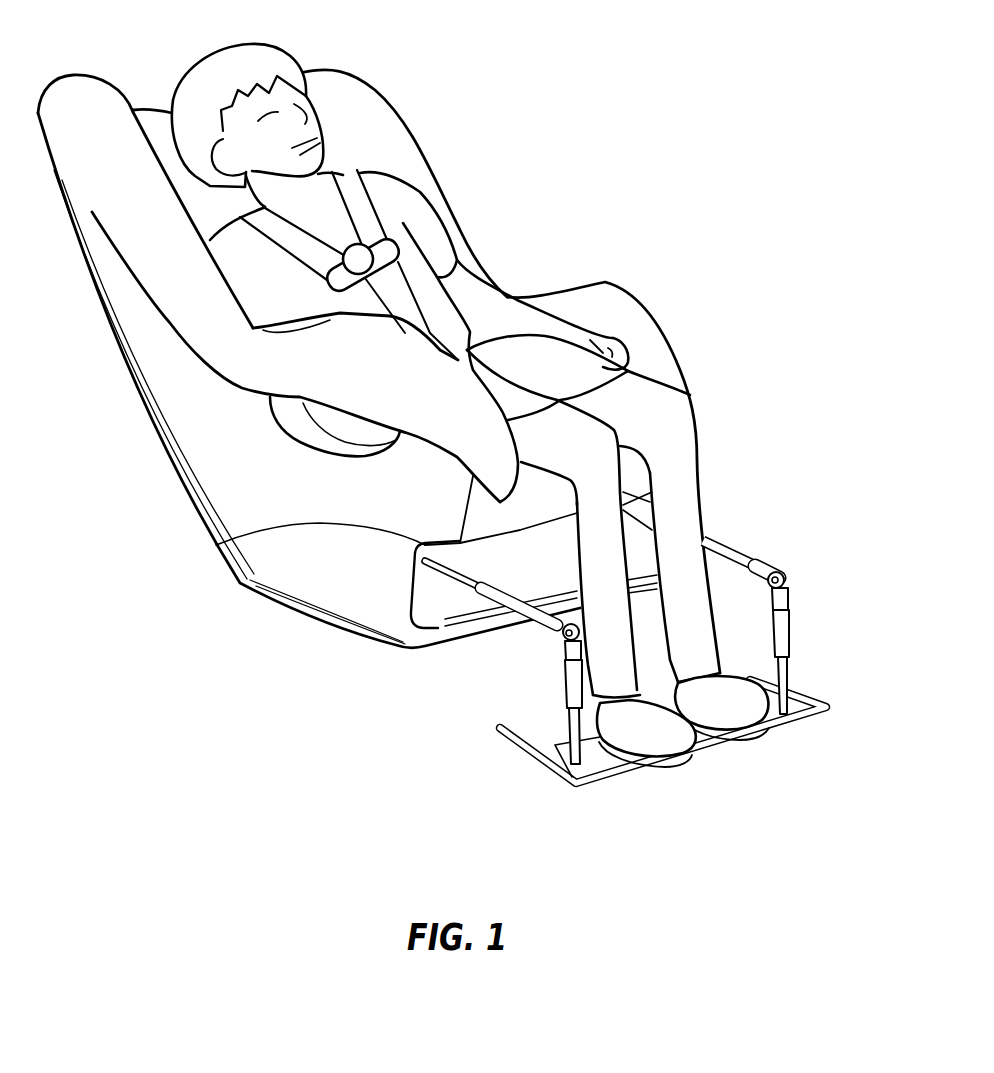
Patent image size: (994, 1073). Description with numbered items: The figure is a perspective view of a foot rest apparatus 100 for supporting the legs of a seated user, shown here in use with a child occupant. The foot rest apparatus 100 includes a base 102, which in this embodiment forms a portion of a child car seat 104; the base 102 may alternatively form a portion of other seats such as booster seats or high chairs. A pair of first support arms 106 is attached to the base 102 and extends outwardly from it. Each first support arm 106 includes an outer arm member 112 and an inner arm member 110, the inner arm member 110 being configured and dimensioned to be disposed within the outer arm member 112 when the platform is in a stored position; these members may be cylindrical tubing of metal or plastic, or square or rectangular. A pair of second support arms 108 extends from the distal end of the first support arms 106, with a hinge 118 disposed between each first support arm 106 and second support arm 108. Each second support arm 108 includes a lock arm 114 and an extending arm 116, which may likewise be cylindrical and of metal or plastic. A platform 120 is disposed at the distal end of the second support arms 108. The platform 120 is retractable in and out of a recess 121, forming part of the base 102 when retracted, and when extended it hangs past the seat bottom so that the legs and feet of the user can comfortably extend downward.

The foot rest apparatus 100 is at (541, 110).
The base 102 is at (247, 565).
The child car seat 104 is at (373, 110).
The first support arms 106 is at (452, 590).
The second support arms 108 is at (563, 702).
The inner arm member 110 is at (412, 597).
The outer arm member 112 is at (500, 614).
The lock arm 114 is at (572, 688).
The extending arm 116 is at (579, 748).
The hinge 118 is at (565, 638).
The platform 120 is at (710, 744).
The recess 121 is at (230, 547).